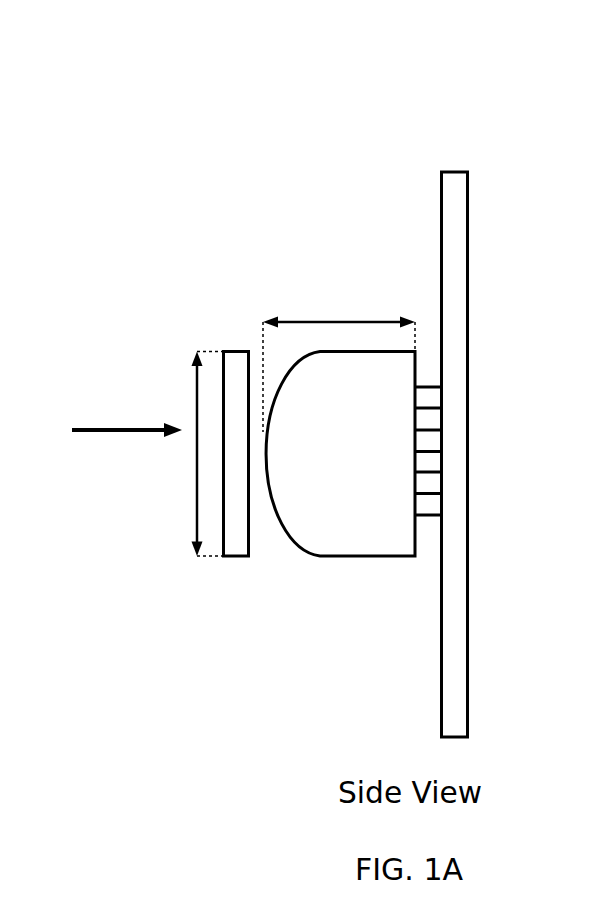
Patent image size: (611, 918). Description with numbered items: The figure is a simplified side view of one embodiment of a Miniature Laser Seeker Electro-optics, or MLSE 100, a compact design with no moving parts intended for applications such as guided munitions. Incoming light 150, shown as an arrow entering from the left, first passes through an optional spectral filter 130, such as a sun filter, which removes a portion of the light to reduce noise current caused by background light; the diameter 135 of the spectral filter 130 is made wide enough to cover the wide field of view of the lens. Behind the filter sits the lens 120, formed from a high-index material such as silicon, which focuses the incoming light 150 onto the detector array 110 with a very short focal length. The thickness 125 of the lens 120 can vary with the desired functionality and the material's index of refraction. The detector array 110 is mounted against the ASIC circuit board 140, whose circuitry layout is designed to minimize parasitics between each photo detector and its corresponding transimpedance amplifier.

The Miniature Laser Seeker Electro-optics (MLSE) 100 is at (227, 154).
The detector array 110 is at (427, 517).
The lens 120 is at (347, 557).
The thickness 125 is at (350, 320).
The spectral filter 130 is at (235, 557).
The diameter 135 is at (196, 468).
The ASIC circuit board 140 is at (441, 675).
The incoming light 150 is at (120, 425).